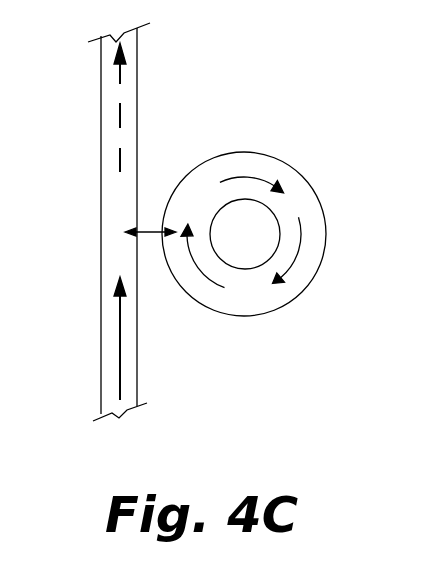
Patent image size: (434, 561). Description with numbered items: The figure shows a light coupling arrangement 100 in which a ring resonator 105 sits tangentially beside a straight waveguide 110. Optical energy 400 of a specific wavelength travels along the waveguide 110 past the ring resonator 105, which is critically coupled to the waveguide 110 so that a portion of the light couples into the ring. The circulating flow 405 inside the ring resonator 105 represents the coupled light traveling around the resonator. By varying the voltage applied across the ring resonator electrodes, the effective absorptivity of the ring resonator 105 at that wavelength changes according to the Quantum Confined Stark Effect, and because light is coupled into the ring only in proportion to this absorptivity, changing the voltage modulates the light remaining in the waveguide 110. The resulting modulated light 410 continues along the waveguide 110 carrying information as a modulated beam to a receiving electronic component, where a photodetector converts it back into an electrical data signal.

The mixing system 100 is at (282, 183).
The ring resonator 105 is at (323, 265).
The tangential waveguide 110 is at (100, 380).
The optical energy 400 is at (120, 352).
The rotational flow 405 is at (301, 227).
The modulated light 410 is at (120, 110).